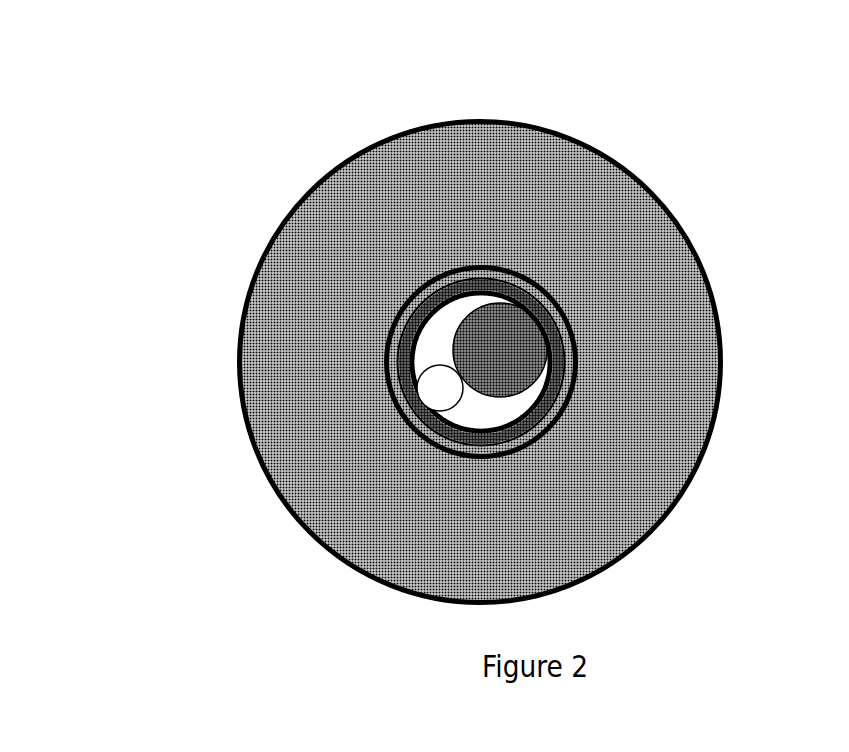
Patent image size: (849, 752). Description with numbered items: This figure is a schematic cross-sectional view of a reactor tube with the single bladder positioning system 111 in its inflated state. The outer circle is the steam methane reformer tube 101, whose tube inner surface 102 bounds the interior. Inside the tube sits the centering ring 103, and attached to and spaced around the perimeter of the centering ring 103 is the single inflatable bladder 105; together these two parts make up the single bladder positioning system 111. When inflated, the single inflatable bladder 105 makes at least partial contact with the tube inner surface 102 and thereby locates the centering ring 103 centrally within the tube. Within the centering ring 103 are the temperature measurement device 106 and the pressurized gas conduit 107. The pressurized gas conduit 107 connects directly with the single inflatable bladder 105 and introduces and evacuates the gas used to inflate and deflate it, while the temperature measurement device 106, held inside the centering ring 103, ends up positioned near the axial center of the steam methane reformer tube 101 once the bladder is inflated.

The single bladder positioning system 111 is at (437, 350).
The steam methane reformer tube 101 is at (242, 285).
The single inflatable bladder 105 is at (423, 210).
The tube inner surface 102 is at (603, 562).
The centering ring 103 is at (500, 420).
The temperature measurement device 106 is at (498, 357).
The pressurized gas conduit 107 is at (447, 387).